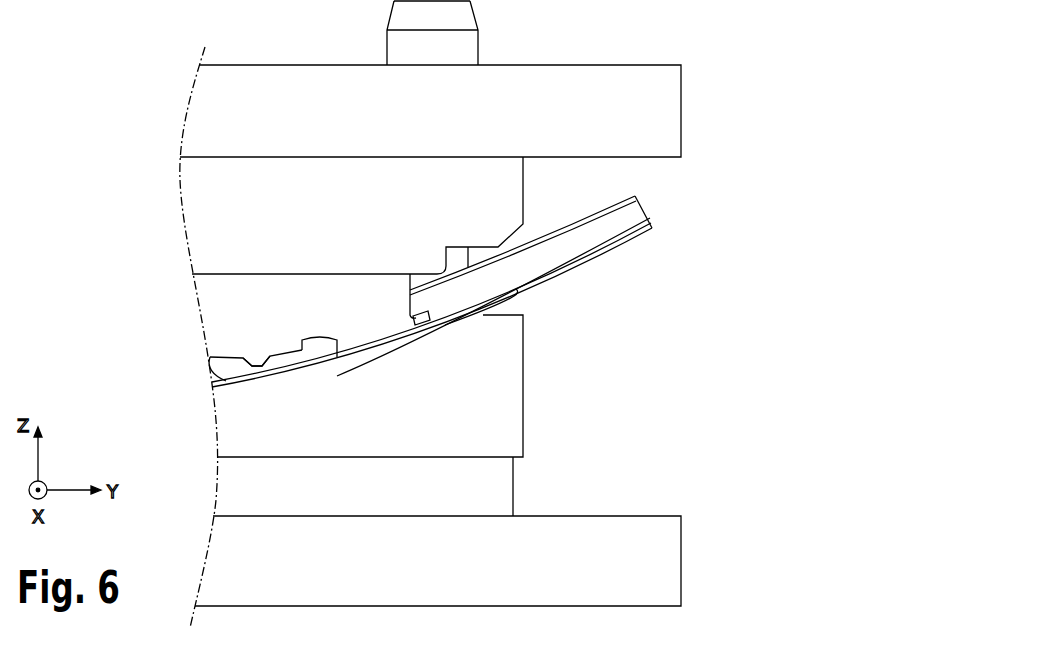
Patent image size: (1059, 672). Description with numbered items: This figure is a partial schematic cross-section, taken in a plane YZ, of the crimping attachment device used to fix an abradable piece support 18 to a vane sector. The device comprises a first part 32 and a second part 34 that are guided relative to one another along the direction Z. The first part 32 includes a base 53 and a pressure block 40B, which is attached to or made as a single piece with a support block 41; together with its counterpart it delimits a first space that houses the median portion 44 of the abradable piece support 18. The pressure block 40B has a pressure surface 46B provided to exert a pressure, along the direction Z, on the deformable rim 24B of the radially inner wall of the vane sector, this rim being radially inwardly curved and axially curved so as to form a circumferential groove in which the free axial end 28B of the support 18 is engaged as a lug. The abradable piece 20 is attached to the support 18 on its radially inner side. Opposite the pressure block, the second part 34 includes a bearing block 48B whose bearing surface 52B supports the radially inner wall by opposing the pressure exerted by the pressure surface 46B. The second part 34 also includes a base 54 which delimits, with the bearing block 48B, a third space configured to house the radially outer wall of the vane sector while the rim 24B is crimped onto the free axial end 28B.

The abradable piece support 18 is at (636, 217).
The median portion 44 is at (432, 307).
The abradable piece 20 is at (603, 203).
The deformable rim 24B is at (282, 360).
The free axial end 28B is at (640, 240).
The first part 32 is at (636, 608).
The second part 34 is at (632, 65).
The pressure block 40B is at (257, 297).
The support block 41 is at (230, 205).
The pressure surface 46B is at (250, 363).
The bearing block 48B is at (305, 440).
The bearing surface 52B is at (208, 357).
The base 53 is at (640, 118).
The base 54 is at (642, 565).